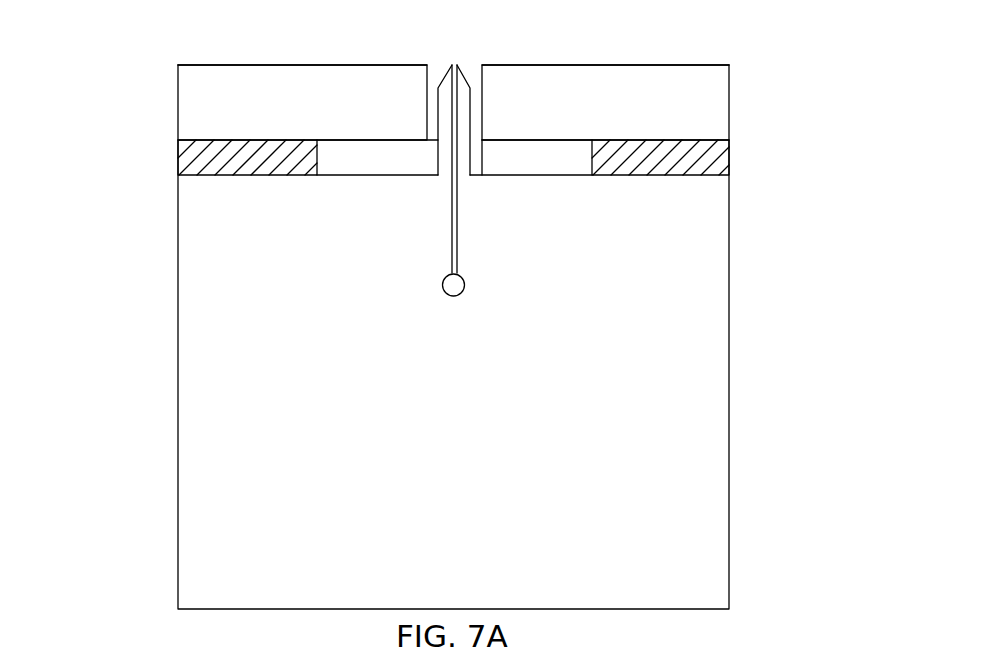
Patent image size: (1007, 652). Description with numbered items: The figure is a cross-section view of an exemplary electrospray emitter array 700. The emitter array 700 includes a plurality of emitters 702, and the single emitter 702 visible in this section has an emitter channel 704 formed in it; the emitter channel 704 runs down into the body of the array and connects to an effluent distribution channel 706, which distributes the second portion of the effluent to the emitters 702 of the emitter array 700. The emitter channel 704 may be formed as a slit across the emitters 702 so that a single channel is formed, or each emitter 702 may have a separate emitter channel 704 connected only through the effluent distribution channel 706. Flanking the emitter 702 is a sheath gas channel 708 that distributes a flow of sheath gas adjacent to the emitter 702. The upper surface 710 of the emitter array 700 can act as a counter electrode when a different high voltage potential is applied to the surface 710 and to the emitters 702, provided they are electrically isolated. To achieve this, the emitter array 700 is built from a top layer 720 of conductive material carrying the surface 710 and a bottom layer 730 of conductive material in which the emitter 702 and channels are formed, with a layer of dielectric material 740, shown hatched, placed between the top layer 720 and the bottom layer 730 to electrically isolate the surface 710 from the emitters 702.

The emitter array 700 is at (738, 127).
The emitter 702 is at (391, 99).
The emitter channel 704 is at (526, 150).
The effluent distribution channel 706 is at (275, 336).
The sheath gas channel 708 is at (423, 216).
The surface 710 is at (443, 44).
The top layer 720 is at (230, 90).
The bottom layer 730 is at (506, 337).
The layer of dielectric material 740 is at (230, 163).